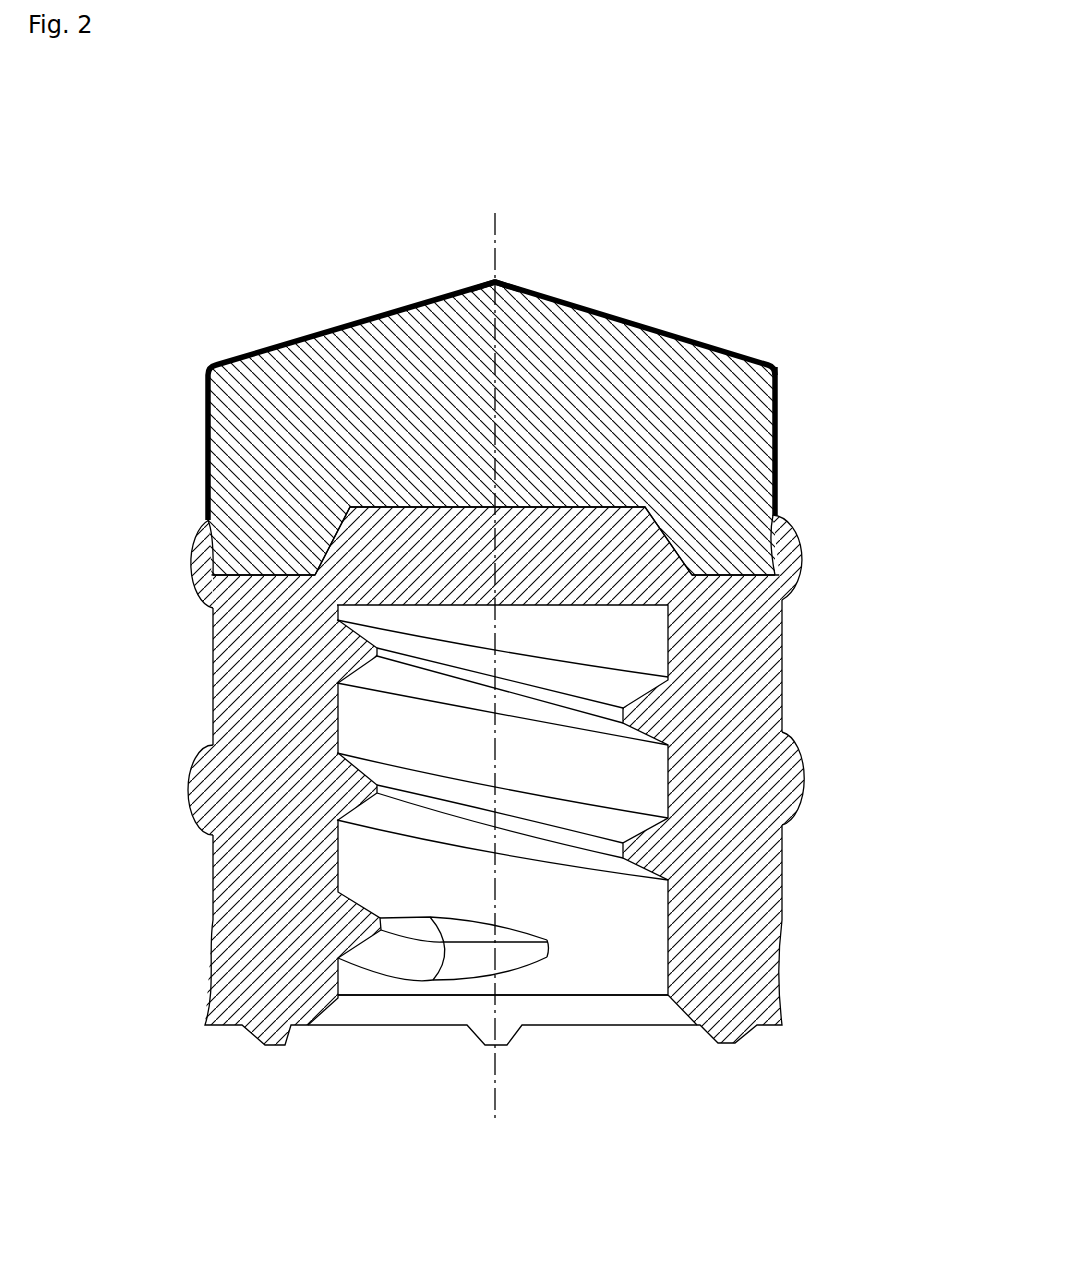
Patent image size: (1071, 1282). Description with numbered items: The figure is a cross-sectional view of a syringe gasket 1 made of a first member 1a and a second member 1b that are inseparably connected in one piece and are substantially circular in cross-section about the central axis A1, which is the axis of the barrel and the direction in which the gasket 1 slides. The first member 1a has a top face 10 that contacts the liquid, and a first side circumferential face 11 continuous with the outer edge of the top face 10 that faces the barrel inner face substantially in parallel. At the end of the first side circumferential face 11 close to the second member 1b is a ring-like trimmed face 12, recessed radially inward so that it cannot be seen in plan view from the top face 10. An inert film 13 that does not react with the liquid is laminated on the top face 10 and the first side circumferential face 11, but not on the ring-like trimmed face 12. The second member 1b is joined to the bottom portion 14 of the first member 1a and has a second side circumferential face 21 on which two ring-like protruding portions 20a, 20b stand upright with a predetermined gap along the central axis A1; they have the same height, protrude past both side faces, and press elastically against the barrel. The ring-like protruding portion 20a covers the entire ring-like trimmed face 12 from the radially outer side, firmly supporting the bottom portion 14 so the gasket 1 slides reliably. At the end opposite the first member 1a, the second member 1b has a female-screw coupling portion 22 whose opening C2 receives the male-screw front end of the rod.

The gasket 1 is at (131, 149).
The first member 1a is at (310, 325).
The second member 1b is at (204, 681).
The top face 10 is at (510, 283).
The first side circumferential face 11 is at (776, 407).
The ring-like trimmed face 12 is at (213, 528).
The inert film 13 is at (625, 317).
The bottom portion 14 is at (712, 548).
The ring-like protruding portion 20a is at (192, 582).
The ring-like protruding portion 20b is at (192, 808).
The second side circumferential face 21 is at (782, 672).
The coupling portion 22 is at (578, 880).
The central axis A1 is at (495, 651).
The opening C2 is at (415, 998).